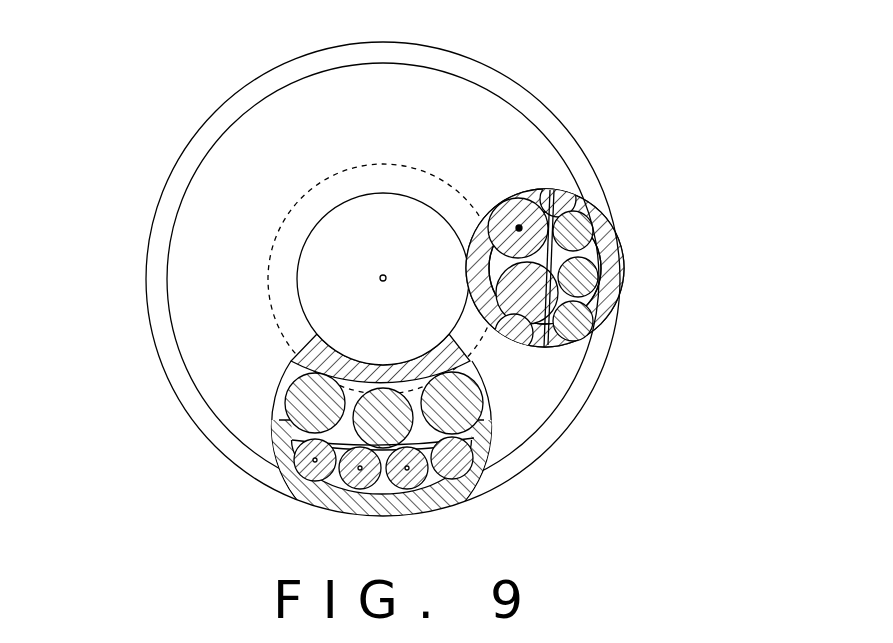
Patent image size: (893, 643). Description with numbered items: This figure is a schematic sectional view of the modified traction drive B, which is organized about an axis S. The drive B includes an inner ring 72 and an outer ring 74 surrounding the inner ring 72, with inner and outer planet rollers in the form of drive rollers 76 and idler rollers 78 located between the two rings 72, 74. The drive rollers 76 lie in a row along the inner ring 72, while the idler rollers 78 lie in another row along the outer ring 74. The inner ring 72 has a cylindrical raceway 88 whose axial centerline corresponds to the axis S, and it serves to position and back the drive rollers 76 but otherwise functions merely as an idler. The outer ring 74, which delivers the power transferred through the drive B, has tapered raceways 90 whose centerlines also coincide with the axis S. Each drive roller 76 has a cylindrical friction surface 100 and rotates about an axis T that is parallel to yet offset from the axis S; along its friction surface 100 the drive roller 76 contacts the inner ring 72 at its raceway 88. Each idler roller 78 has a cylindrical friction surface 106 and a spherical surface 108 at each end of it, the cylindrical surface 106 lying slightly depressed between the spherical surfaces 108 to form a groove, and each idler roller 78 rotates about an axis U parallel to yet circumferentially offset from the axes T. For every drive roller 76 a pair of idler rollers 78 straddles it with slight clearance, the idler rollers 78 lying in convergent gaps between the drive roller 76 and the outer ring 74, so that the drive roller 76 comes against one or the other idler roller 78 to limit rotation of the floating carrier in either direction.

The modified traction drive B is at (570, 88).
The outer ring 74 is at (152, 221).
The tapered raceways 90 is at (231, 119).
The inner ring 72 is at (349, 356).
The axis S is at (383, 274).
The cylindrical raceway 88 is at (313, 357).
The axis U is at (360, 470).
The cylindrical friction surface 100 is at (528, 186).
The cylindrical friction surface 106 is at (586, 208).
The spherical surfaces 108 is at (586, 208).
The drive rollers 76 is at (550, 350).
The axis T is at (519, 226).
The idler rollers 78 is at (583, 276).